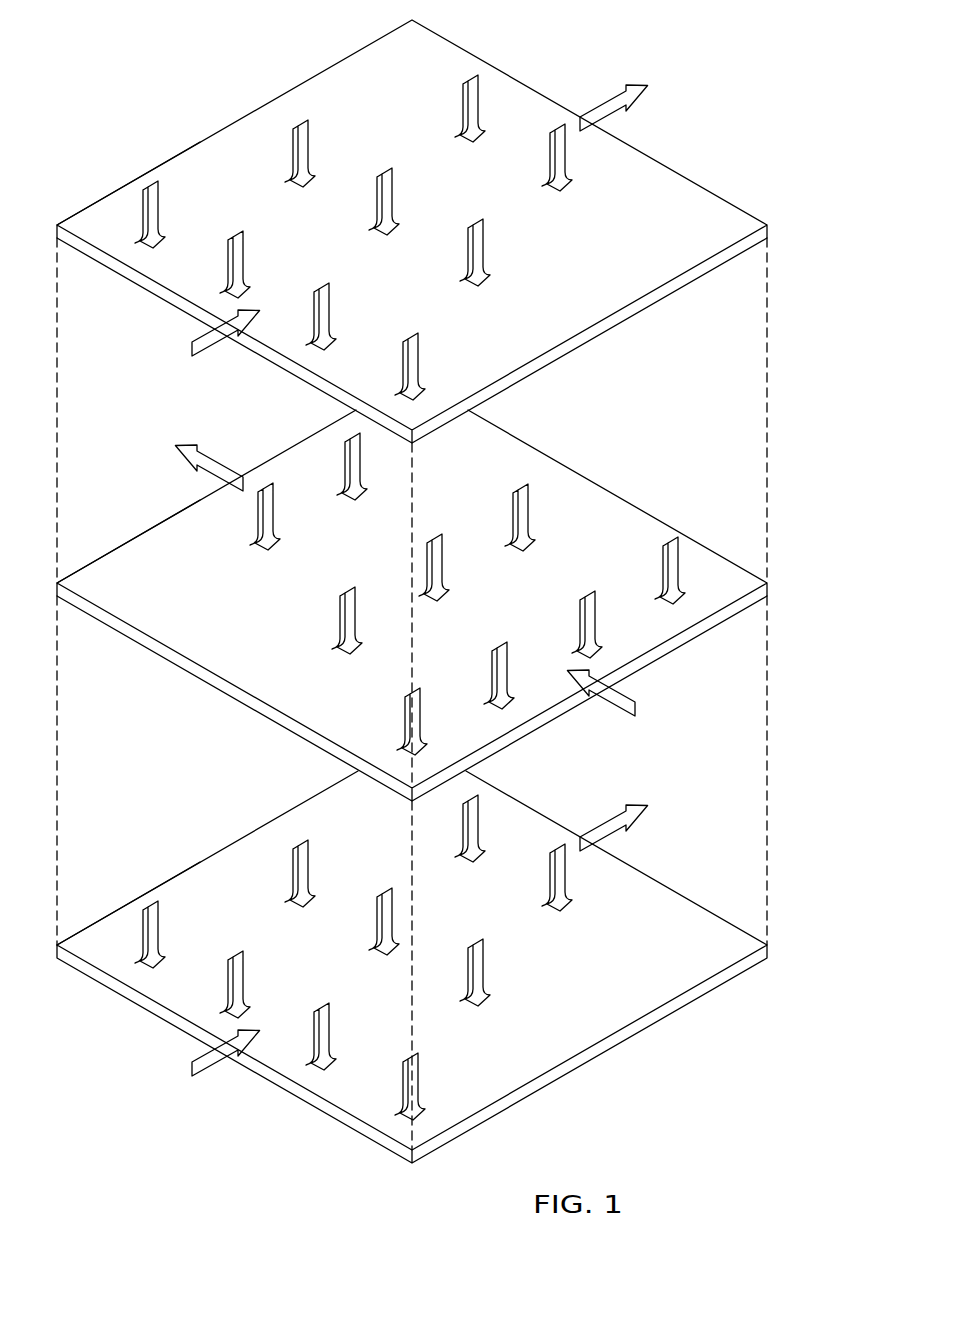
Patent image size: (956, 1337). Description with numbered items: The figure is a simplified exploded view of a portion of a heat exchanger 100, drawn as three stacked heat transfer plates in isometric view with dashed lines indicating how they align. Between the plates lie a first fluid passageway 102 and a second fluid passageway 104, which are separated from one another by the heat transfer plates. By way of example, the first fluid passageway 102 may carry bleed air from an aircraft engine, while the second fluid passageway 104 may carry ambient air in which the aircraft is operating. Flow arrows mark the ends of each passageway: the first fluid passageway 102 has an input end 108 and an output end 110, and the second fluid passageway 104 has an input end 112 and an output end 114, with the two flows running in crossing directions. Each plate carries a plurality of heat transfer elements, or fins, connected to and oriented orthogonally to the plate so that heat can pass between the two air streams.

The heat exchanger 100 is at (703, 105).
The first fluid passageway 102 is at (738, 419).
The second fluid passageway 104 is at (732, 768).
The input end 108 is at (628, 669).
The output end 110 is at (172, 518).
The input end 112 is at (182, 1023).
The output end 114 is at (637, 868).